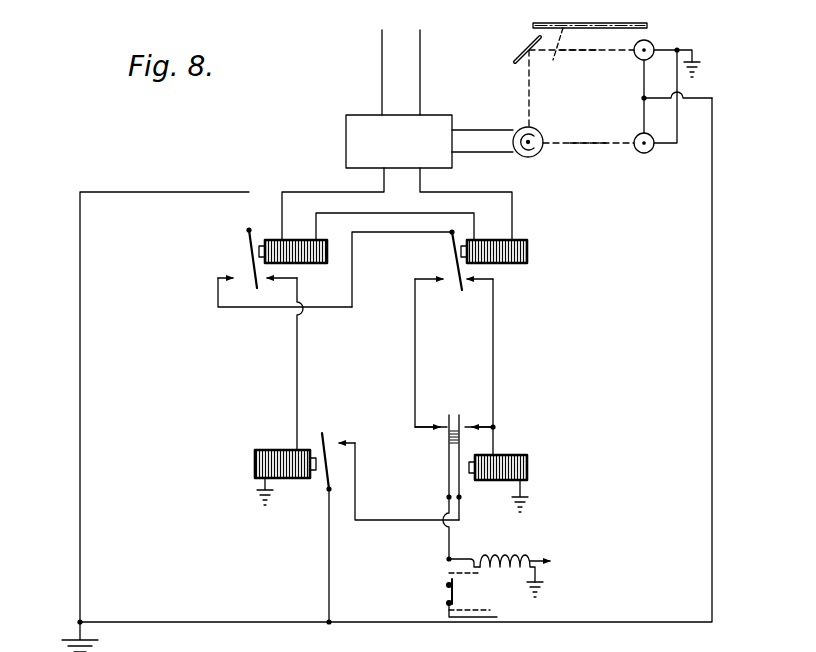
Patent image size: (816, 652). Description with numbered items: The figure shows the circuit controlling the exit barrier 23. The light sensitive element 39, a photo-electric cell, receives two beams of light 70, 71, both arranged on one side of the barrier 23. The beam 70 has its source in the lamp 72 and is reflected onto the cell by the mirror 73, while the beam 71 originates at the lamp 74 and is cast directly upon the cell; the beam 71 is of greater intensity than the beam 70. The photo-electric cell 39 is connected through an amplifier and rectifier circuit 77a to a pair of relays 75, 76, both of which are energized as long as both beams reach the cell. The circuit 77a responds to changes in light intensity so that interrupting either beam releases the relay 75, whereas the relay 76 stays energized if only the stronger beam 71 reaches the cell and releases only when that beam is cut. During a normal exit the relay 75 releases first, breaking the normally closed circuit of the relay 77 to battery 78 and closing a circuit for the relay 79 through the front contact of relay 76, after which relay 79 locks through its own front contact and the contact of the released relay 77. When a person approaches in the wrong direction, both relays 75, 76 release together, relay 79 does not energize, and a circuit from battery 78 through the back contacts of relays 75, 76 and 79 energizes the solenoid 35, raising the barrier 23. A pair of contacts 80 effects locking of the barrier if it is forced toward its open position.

The amplifier and rectifier circuit 77a is at (346, 131).
The light sensitive element 39 is at (541, 152).
The mirror 73 is at (517, 56).
The exit barrier 23 is at (553, 62).
The beam of light 70 is at (578, 50).
The beam of light 71 is at (588, 143).
The lamp 72 is at (652, 44).
The lamp 74 is at (647, 153).
The relay 75 is at (315, 265).
The relay 76 is at (517, 265).
The relay 77 is at (295, 478).
The relay 79 is at (512, 458).
The solenoid 35 is at (523, 556).
The pair of contacts 80 is at (446, 591).
The battery 78 is at (75, 638).